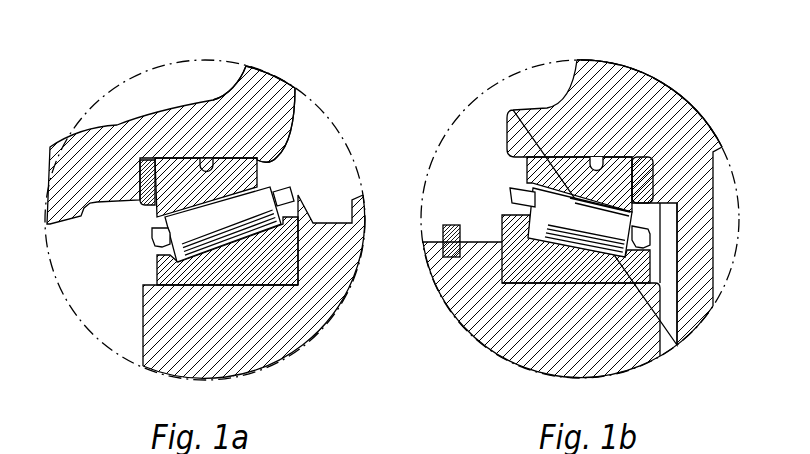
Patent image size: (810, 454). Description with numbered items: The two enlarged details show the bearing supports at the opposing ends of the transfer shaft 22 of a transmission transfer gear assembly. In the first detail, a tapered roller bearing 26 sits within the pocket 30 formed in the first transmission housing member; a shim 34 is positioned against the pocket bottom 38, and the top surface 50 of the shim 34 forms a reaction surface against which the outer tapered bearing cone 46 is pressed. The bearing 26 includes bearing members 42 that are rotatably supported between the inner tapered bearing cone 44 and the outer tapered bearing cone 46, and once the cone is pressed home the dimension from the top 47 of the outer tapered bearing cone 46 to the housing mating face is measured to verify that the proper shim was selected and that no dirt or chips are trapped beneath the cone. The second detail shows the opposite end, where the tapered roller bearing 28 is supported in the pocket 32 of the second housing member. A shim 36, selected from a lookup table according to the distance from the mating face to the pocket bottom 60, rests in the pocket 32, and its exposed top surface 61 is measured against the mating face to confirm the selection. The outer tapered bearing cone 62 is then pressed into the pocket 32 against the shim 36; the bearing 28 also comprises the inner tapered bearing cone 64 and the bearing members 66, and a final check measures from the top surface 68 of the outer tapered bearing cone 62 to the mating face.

In FIG. 1A, the transfer shaft 22 is at (325, 263).
In FIG. 1A, the tapered roller bearing 26 is at (128, 247).
In FIG. 1A, the pocket 30 is at (215, 158).
In FIG. 1A, the shim 34 is at (140, 178).
In FIG. 1A, the pocket bottom 38 is at (140, 163).
In FIG. 1A, the bearing members 42 is at (281, 189).
In FIG. 1A, the inner tapered bearing cone 44 is at (325, 317).
In FIG. 1A, the outer tapered bearing cone 46 is at (234, 158).
In FIG. 1A, the top of outer tapered bearing cone 47 is at (282, 85).
In FIG. 1A, the top surface of shim 50 is at (185, 158).
In FIG. 1B, the tapered roller bearing 28 is at (495, 175).
In FIG. 1B, the pocket 32 is at (585, 155).
In FIG. 1B, the shim 36 is at (688, 150).
In FIG. 1B, the pocket bottom 60 is at (672, 225).
In FIG. 1B, the top surface of shim 61 is at (630, 156).
In FIG. 1B, the outer tapered bearing cone 62 is at (553, 156).
In FIG. 1B, the inner tapered bearing cone 64 is at (530, 262).
In FIG. 1B, the bearing members 66 is at (512, 197).
In FIG. 1B, the top surface of outer tapered bearing cone 68 is at (520, 165).